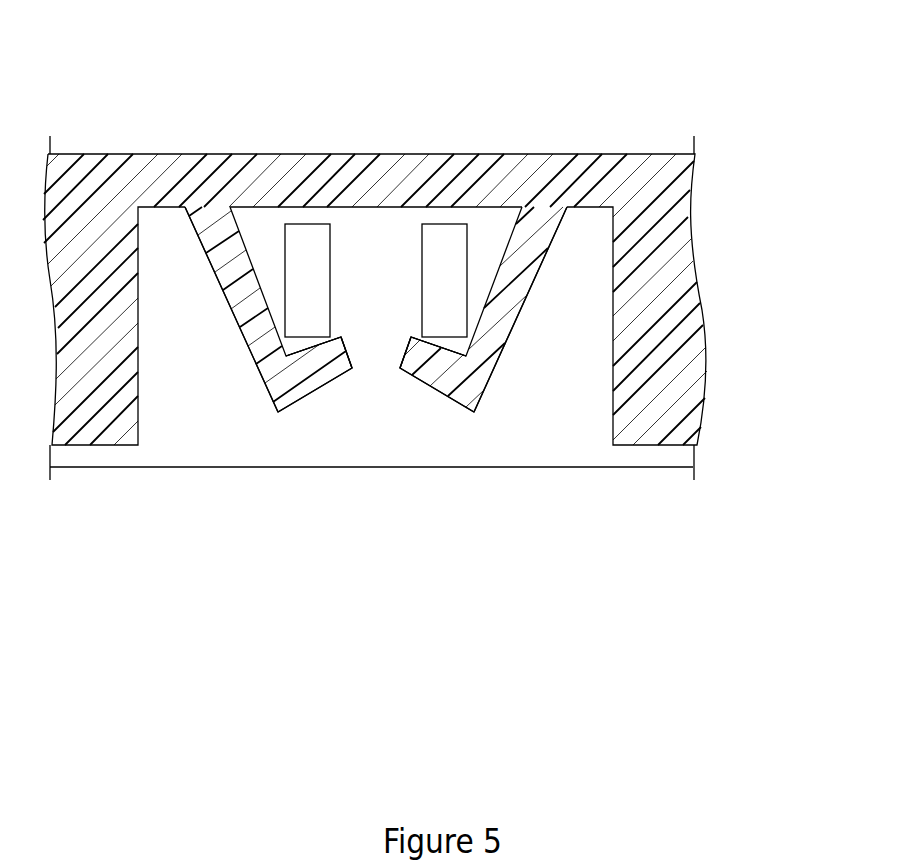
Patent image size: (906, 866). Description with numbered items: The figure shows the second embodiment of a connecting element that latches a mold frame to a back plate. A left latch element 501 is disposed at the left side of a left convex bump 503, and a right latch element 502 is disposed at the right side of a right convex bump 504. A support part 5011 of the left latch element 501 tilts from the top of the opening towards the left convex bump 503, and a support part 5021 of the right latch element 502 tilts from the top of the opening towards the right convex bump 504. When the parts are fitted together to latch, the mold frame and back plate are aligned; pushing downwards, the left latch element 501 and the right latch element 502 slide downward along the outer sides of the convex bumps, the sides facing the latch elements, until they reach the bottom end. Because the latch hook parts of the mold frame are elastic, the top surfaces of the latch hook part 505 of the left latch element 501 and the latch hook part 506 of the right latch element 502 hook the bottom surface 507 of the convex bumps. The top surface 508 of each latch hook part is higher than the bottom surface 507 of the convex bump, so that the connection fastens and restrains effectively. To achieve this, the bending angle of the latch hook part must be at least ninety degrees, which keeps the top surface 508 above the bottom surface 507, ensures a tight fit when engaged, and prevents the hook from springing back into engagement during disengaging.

The left latch element 501 is at (263, 397).
The support part 5011 is at (223, 290).
The right latch element 502 is at (481, 396).
The support part 5021 is at (500, 360).
The left convex bump 503 is at (303, 222).
The right convex bump 504 is at (448, 222).
The latch hook part 505 is at (313, 393).
The latch hook part 506 is at (441, 345).
The bottom surface of convex bump 507 is at (302, 338).
The top surface of latch hook part 508 is at (328, 345).